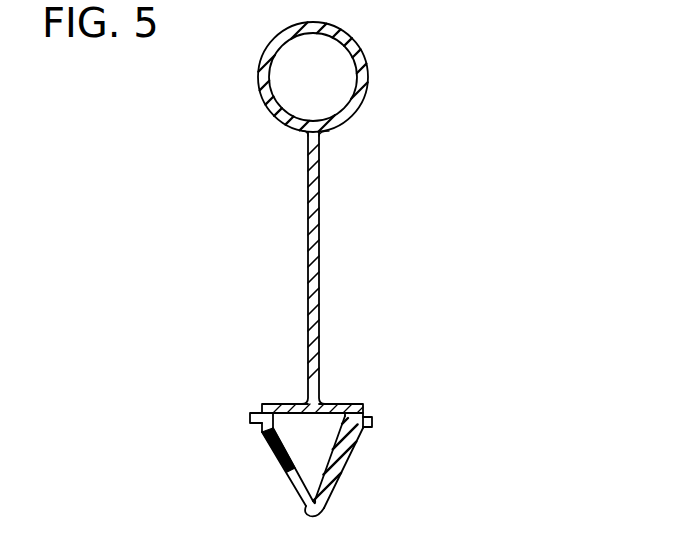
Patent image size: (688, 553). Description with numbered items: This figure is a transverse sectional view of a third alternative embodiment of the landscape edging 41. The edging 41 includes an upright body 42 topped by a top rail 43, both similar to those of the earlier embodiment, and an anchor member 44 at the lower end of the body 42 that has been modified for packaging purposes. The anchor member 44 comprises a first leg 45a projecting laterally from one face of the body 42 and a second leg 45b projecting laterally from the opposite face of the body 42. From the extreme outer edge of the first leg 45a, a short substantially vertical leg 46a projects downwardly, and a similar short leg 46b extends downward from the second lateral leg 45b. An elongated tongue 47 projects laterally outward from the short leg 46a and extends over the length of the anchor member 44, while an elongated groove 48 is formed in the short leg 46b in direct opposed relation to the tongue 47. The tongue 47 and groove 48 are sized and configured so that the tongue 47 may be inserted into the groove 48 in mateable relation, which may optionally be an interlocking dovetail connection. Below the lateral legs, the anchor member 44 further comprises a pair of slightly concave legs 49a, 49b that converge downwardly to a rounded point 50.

The landscape edging 41 is at (230, 78).
The body 42 is at (298, 257).
The top rail 43 is at (356, 48).
The anchor member 44 is at (311, 440).
The first leg 45a is at (268, 403).
The second leg 45b is at (338, 403).
The short substantially vertical leg 46a is at (259, 431).
The short leg 46b is at (365, 430).
The elongated tongue 47 is at (250, 417).
The elongated groove 48 is at (368, 419).
The slightly concave leg 49a is at (287, 468).
The slightly concave leg 49b is at (350, 458).
The rounded point 50 is at (309, 514).